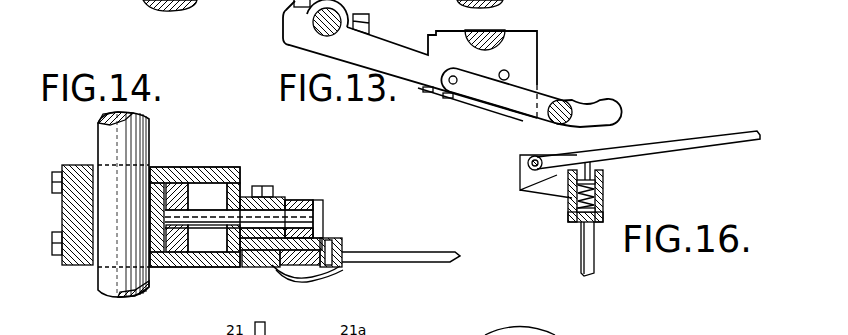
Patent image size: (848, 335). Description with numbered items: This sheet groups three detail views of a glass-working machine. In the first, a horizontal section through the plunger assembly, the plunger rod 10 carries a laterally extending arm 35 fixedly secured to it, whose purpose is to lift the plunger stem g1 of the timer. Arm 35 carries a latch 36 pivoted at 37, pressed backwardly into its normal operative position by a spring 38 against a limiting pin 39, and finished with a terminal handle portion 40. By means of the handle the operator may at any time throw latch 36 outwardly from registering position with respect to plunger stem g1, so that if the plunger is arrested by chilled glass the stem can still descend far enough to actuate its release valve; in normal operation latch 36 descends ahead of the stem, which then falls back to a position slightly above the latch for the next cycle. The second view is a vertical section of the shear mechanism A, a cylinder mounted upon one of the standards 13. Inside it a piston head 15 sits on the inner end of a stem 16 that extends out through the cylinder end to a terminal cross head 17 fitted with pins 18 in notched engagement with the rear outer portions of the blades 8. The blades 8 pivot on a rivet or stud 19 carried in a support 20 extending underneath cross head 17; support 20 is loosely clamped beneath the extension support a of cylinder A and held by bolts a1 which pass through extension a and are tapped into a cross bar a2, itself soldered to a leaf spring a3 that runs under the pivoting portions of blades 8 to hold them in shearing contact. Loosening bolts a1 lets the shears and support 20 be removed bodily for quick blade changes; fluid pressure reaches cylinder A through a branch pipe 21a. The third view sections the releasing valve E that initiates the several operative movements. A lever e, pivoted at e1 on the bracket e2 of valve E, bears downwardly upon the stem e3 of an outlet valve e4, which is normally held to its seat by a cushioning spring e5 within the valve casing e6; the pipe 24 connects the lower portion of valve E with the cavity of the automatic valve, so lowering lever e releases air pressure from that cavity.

In FIG. 13, the plunger rod 10 is at (317, 21).
In FIG. 13, the standard 13 is at (497, 27).
In FIG. 14, the standard 13 is at (98, 146).
In FIG. 13, the arm 35 is at (416, 77).
In FIG. 13, the latch 36 is at (520, 98).
In FIG. 13, the pivot 37 is at (448, 97).
In FIG. 13, the spring 38 is at (485, 106).
In FIG. 13, the limiting pin 39 is at (509, 72).
In FIG. 13, the handle portion 40 is at (614, 107).
In FIG. 13, the plunger stem g1 is at (570, 102).
In FIG. 14, the shear mechanism A is at (188, 161).
In FIG. 14, the piston head 15 is at (182, 252).
In FIG. 14, the stem 16 is at (205, 208).
In FIG. 14, the cross head 17 is at (301, 212).
In FIG. 14, the pins 18 is at (318, 215).
In FIG. 14, the rivet or stud 19 is at (331, 265).
In FIG. 14, the support 20 is at (336, 240).
In FIG. 14, the shaft 21a is at (223, 212).
In FIG. 14, the blades 8 is at (386, 259).
In FIG. 14, the extension support a is at (246, 196).
In FIG. 14, the bolts a1 is at (268, 186).
In FIG. 14, the cross bar a2 is at (255, 267).
In FIG. 14, the leaf spring a3 is at (290, 279).
In FIG. 16, the lever e is at (688, 142).
In FIG. 16, the pivot e1 is at (526, 168).
In FIG. 16, the release valve E is at (520, 190).
In FIG. 16, the bracket e2 is at (543, 198).
In FIG. 16, the stem e3 is at (591, 167).
In FIG. 16, the outlet valve e4 is at (599, 185).
In FIG. 16, the cushioning spring e5 is at (601, 200).
In FIG. 16, the valve casing e6 is at (570, 207).
In FIG. 16, the pipe 24 is at (581, 259).